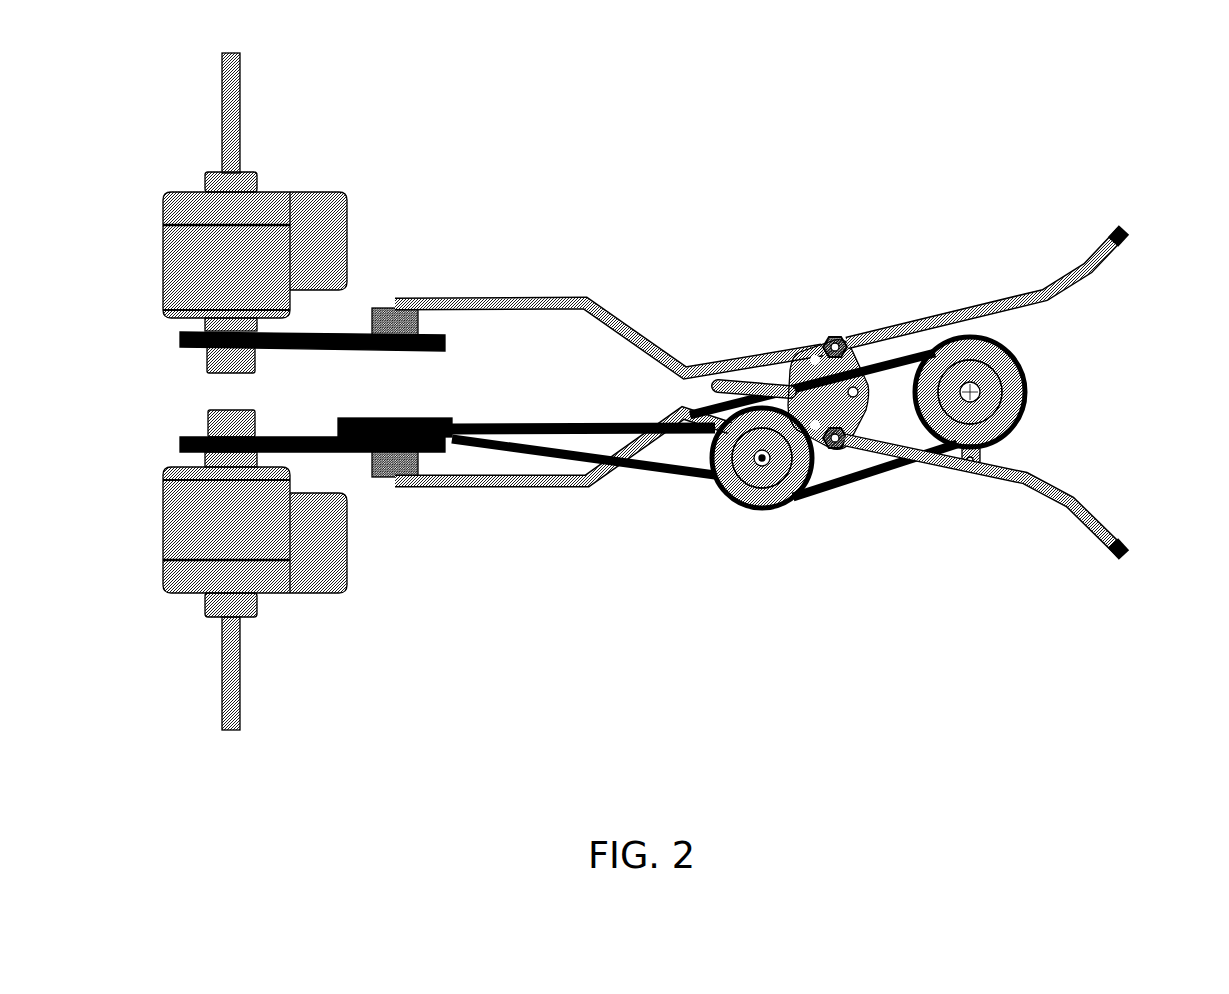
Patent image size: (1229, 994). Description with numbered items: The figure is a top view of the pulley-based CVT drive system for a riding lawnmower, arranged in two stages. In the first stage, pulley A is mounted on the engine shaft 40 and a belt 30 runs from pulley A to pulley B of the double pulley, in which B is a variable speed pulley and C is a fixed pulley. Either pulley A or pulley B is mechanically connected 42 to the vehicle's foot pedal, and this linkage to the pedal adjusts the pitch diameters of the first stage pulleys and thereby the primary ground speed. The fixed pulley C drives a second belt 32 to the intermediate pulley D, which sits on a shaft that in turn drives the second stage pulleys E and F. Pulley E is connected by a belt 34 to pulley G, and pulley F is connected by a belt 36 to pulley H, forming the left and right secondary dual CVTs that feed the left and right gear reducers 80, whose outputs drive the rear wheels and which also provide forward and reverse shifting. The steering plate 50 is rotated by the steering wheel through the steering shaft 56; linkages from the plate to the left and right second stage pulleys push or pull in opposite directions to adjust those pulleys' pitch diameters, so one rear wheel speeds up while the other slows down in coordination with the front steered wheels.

The gear reducer 80 is at (309, 418).
The belt 34 is at (338, 335).
The belt 36 is at (332, 447).
The second belt 32 is at (546, 450).
The belt 30 is at (903, 357).
The engine shaft 40 is at (992, 333).
The mechanical connection to foot pedal 42 is at (949, 546).
The steering plate 50 is at (888, 282).
The steering shaft 56 is at (693, 320).
The pulley A is at (1023, 357).
The intermediate pulley D is at (526, 409).
The pulley E is at (597, 317).
The pulley F is at (551, 473).
The pulley G is at (166, 382).
The pulley H is at (166, 420).